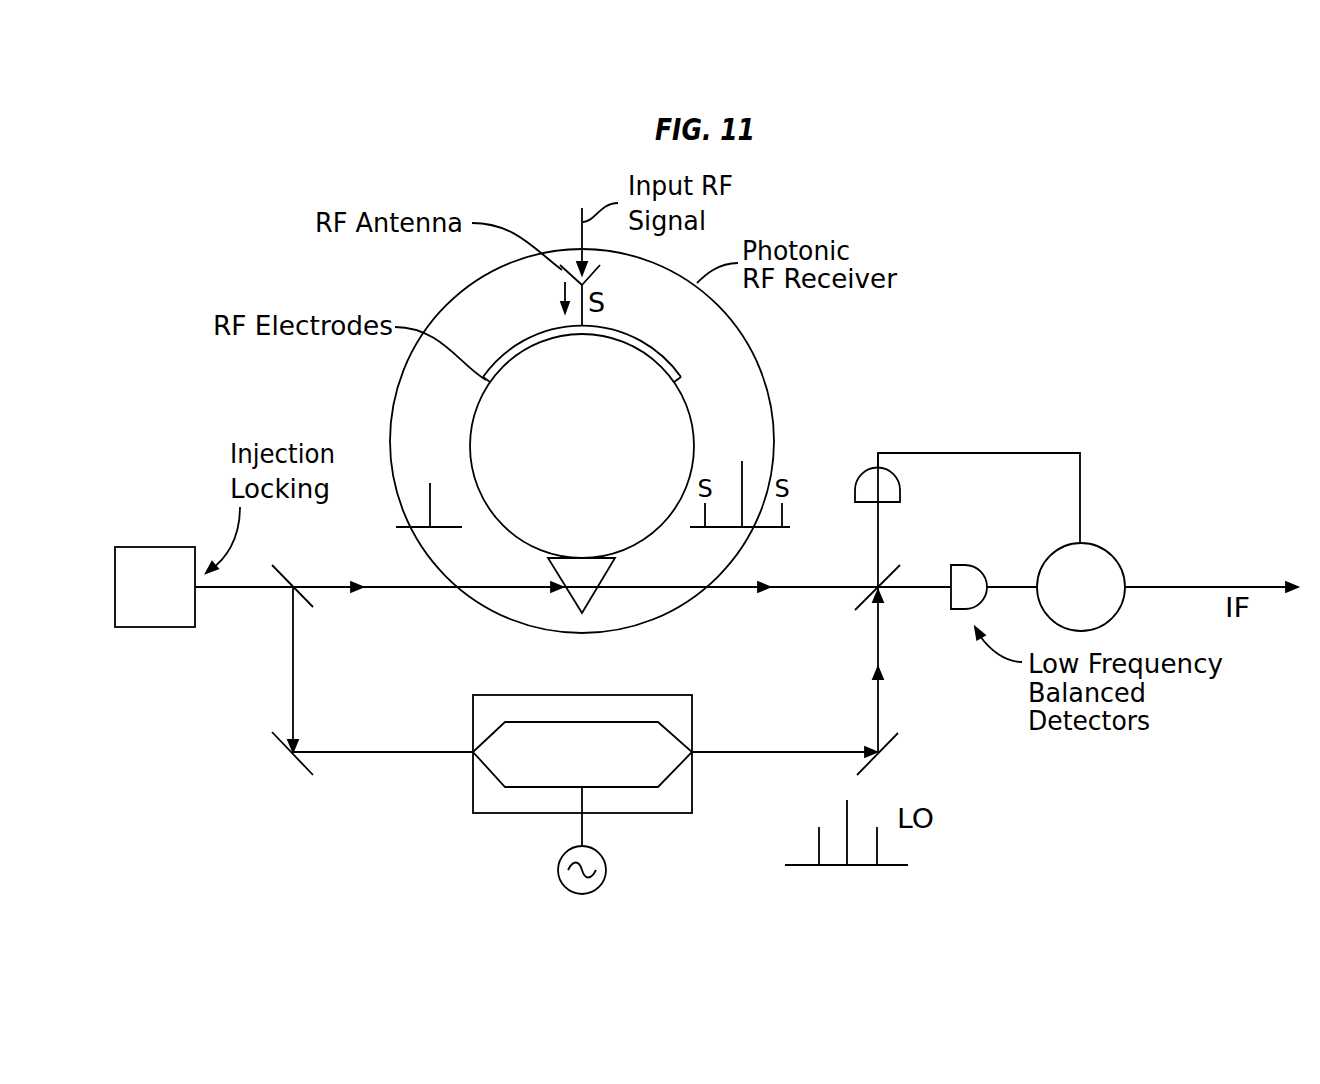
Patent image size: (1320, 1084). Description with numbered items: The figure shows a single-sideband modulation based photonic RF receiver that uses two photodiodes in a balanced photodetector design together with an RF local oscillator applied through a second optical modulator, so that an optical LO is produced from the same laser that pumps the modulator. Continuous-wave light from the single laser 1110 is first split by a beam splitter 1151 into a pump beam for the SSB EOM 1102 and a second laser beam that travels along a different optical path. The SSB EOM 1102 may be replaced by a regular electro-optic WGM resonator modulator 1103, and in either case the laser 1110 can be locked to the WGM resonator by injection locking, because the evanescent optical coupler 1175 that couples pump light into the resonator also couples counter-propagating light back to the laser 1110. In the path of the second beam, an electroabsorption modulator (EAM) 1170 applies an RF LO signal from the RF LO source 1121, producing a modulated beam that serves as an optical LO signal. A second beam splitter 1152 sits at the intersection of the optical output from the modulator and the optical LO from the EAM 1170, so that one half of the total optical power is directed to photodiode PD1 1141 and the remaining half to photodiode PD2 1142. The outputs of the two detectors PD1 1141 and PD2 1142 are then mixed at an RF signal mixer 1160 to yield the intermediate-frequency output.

The SSB EOM 1102 is at (822, 444).
The regular electro-optic WGM resonator modulator 1103 is at (660, 428).
The laser 1110 is at (155, 623).
The RF LO source 1121 is at (635, 840).
The photodiode PD1 1141 is at (967, 498).
The photodiode PD2 1142 is at (995, 568).
The beam splitter 1151 is at (340, 658).
The second beam splitter 1152 is at (831, 602).
The RF signal mixer 1160 is at (1093, 543).
The electroabsorption modulator (EAM) 1170 is at (485, 800).
The evanescent optical coupler 1175 is at (610, 721).